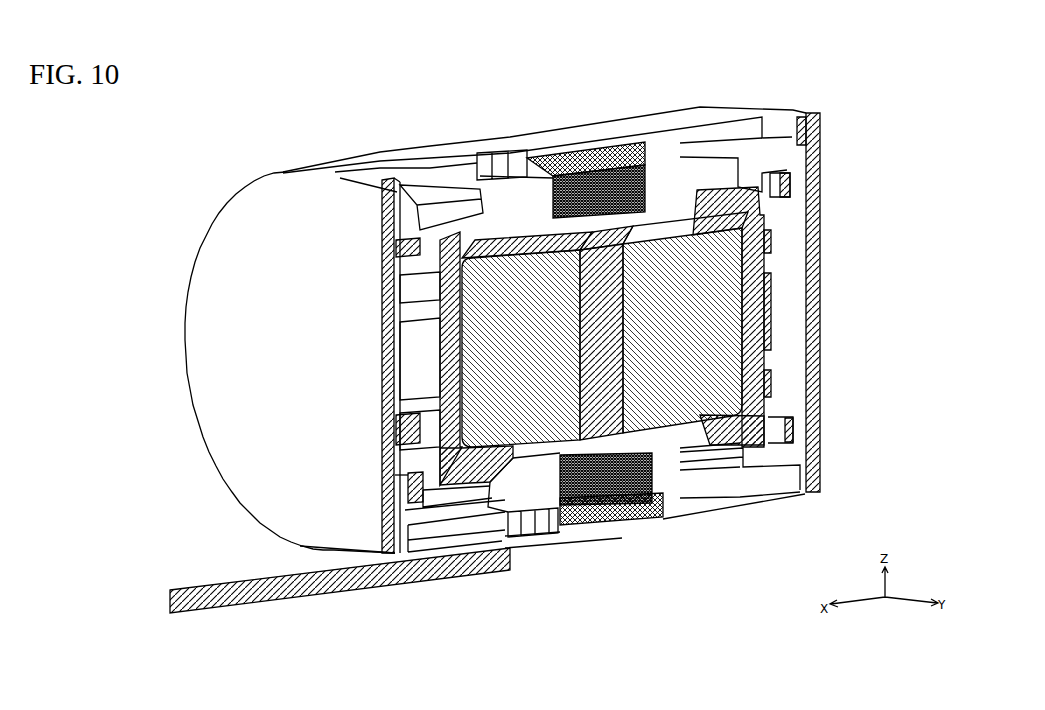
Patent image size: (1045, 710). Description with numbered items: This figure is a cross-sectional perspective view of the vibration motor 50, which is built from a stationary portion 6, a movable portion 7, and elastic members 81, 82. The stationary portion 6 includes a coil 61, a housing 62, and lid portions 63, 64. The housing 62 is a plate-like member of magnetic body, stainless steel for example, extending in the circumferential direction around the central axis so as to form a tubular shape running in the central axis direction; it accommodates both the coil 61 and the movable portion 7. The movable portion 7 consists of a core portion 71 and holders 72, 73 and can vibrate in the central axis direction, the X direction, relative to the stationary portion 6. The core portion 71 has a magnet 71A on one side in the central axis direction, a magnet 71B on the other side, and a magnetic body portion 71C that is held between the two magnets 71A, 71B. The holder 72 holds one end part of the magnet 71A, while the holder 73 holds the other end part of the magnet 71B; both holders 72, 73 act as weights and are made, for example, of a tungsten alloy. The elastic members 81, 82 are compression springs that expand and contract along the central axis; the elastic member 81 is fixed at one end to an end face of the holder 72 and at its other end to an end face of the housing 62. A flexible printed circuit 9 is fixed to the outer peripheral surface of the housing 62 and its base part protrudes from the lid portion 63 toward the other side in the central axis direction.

The vibration motor 50 is at (779, 31).
The stationary portion 6 is at (582, 72).
The coil 61 is at (505, 190).
The housing 62 is at (545, 143).
The lid portion 63 is at (340, 190).
The lid portion 64 is at (807, 130).
The movable portion 7 is at (725, 604).
The core portion 71 is at (688, 576).
The magnet 71A is at (538, 420).
The magnet 71B is at (663, 423).
The magnetic body portion 71C is at (606, 405).
The holder 72 is at (500, 472).
The holder 73 is at (742, 445).
The elastic member 81 is at (357, 240).
The elastic member 82 is at (783, 143).
The flexible printed circuit (FPC) 9 is at (203, 577).